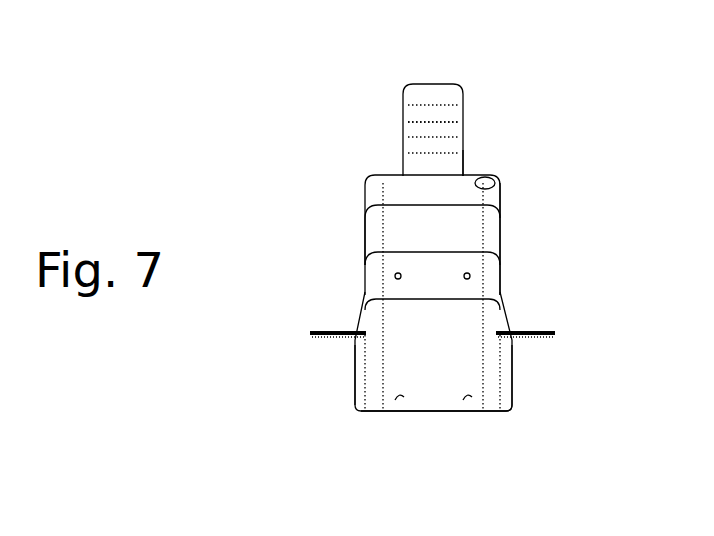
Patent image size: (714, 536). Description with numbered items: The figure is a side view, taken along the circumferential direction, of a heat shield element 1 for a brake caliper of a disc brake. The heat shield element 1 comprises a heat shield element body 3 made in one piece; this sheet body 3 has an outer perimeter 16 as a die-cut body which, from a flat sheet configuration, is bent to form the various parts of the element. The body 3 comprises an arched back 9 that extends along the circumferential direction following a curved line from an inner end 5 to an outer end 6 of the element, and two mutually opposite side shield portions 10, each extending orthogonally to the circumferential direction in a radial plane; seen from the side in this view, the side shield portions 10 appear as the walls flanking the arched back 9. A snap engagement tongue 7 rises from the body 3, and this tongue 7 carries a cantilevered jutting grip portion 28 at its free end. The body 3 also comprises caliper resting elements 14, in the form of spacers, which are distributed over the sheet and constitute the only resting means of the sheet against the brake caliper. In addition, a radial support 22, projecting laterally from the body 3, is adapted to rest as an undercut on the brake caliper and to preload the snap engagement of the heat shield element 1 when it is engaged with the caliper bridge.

The heat shield element 1 is at (532, 203).
The heat shield element body 3 is at (513, 213).
The inner end 5 is at (467, 176).
The outer end 6 is at (438, 411).
The snap engagement tongue 7 is at (418, 137).
The arched back 9 is at (400, 232).
The side shield portion 10 is at (350, 402).
The caliper resting element 14 is at (403, 183).
The outer perimeter 16 is at (506, 412).
The radial support 22 is at (320, 338).
The cantilevered jutting grip portion 28 is at (425, 100).